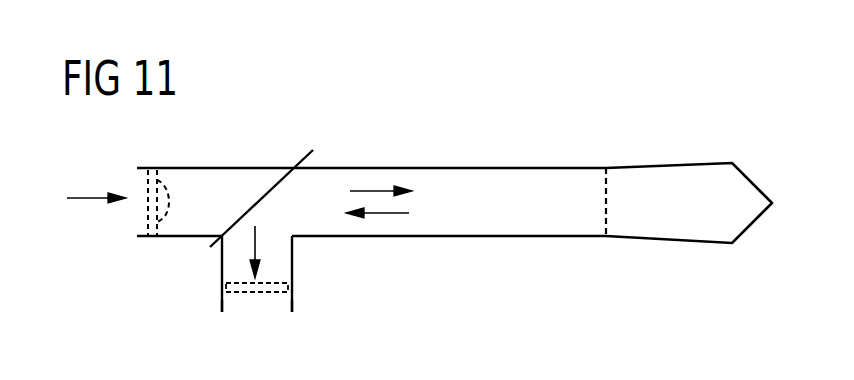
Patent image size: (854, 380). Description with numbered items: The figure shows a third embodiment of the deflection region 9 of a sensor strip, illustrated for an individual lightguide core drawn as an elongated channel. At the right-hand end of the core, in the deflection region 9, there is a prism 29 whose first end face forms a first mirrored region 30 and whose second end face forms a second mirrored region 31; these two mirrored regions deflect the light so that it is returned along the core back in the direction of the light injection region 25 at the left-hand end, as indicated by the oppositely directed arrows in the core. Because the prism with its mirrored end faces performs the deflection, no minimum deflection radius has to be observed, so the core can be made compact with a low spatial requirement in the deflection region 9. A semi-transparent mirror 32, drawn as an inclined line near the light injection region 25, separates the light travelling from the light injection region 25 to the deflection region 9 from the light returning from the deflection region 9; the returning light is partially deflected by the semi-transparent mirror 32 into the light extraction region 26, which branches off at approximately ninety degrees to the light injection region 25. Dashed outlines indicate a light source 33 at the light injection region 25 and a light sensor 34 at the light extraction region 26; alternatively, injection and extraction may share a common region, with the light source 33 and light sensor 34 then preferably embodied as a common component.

The deflection region 9 is at (628, 150).
The light injection region 25 is at (135, 184).
The light extraction region 26 is at (268, 303).
The prism 29 is at (686, 176).
The first mirrored region 30 is at (752, 180).
The second mirrored region 31 is at (755, 226).
The semi-transparent mirror 32 is at (300, 152).
The light source 33 is at (147, 222).
The light sensor 34 is at (246, 291).